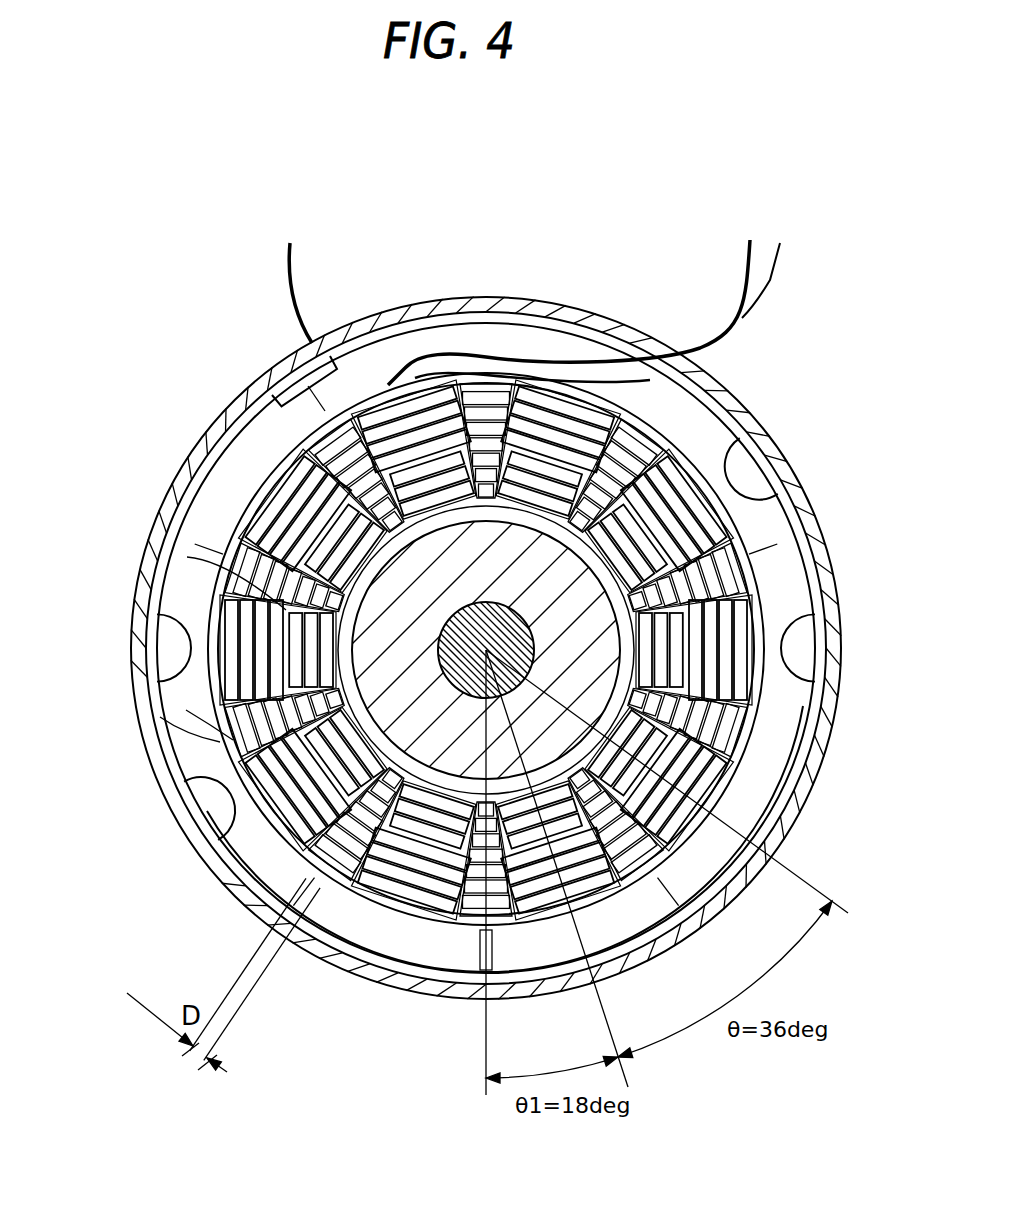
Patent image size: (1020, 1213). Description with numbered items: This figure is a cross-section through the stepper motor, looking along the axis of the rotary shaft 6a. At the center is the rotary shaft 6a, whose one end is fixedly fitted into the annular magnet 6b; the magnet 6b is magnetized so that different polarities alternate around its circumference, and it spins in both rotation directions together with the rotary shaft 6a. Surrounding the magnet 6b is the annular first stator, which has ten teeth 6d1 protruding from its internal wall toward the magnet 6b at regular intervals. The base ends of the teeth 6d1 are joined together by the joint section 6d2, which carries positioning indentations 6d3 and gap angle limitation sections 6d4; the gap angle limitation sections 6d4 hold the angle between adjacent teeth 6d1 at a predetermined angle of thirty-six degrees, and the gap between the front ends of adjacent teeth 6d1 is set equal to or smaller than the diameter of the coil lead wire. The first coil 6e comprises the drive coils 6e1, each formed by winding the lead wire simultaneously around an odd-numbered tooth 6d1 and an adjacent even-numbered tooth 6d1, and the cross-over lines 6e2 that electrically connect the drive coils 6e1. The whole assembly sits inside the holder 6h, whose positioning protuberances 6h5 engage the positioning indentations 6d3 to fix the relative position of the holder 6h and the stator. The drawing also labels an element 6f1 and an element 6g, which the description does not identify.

The rotary shaft 6a is at (262, 441).
The magnet 6b is at (486, 648).
The teeth 6d1 is at (528, 649).
The joint section 6d2 is at (505, 873).
The positioning indentations 6d3 is at (486, 648).
The gap angle limitation sections 6d4 is at (479, 572).
The first coil 6e is at (758, 285).
The drive coils 6e1 is at (486, 589).
The cross-over lines 6e2 is at (239, 630).
The tab 6f1 is at (457, 988).
The lead wire 6g is at (280, 292).
The holder 6h is at (786, 460).
The positioning protuberances 6h5 is at (475, 725).